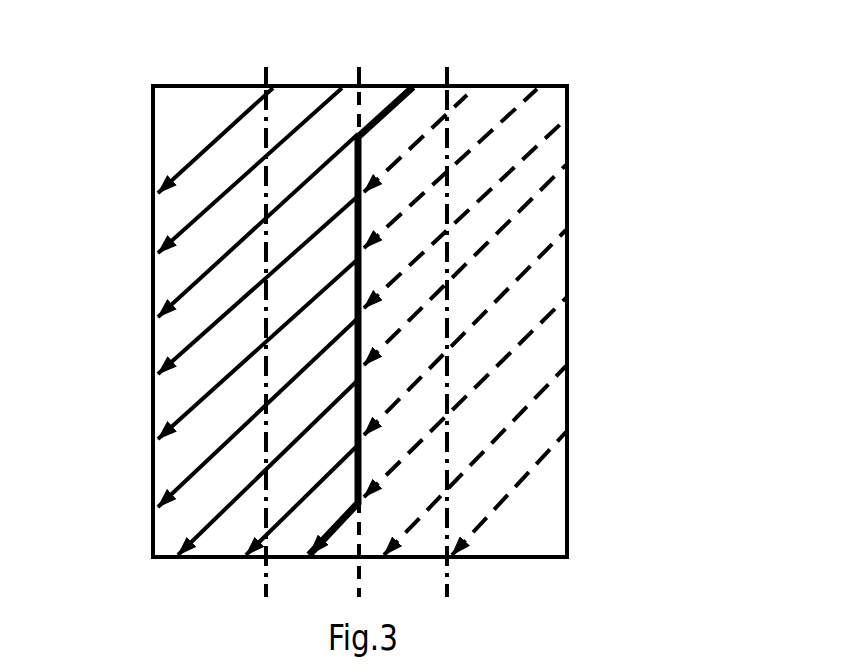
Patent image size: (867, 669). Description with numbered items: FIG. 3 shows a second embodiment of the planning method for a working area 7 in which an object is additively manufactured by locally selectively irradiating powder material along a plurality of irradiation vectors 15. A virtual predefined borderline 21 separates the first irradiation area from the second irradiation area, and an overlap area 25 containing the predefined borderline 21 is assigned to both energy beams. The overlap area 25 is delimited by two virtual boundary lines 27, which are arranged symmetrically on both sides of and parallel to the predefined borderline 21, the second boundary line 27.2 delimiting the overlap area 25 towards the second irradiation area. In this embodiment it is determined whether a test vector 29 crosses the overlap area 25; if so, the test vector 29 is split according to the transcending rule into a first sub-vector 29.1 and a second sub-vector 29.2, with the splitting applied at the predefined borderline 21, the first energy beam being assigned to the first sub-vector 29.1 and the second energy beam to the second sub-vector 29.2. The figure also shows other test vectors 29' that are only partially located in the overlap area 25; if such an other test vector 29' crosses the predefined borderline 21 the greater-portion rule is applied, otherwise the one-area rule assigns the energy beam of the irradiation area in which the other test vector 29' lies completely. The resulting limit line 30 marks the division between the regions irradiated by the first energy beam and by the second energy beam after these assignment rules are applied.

The working area 7 is at (596, 310).
The irradiation vectors 15 is at (186, 294).
The predefined borderline 21 is at (362, 103).
The overlap area 25 is at (301, 78).
The boundary lines 27 is at (266, 73).
The second boundary line 27.2 is at (447, 73).
The test vector 29 is at (519, 322).
The other test vectors 29' is at (202, 321).
The first sub-vector 29.1 is at (192, 409).
The second sub-vector 29.2 is at (500, 128).
The limit line 30 is at (375, 467).